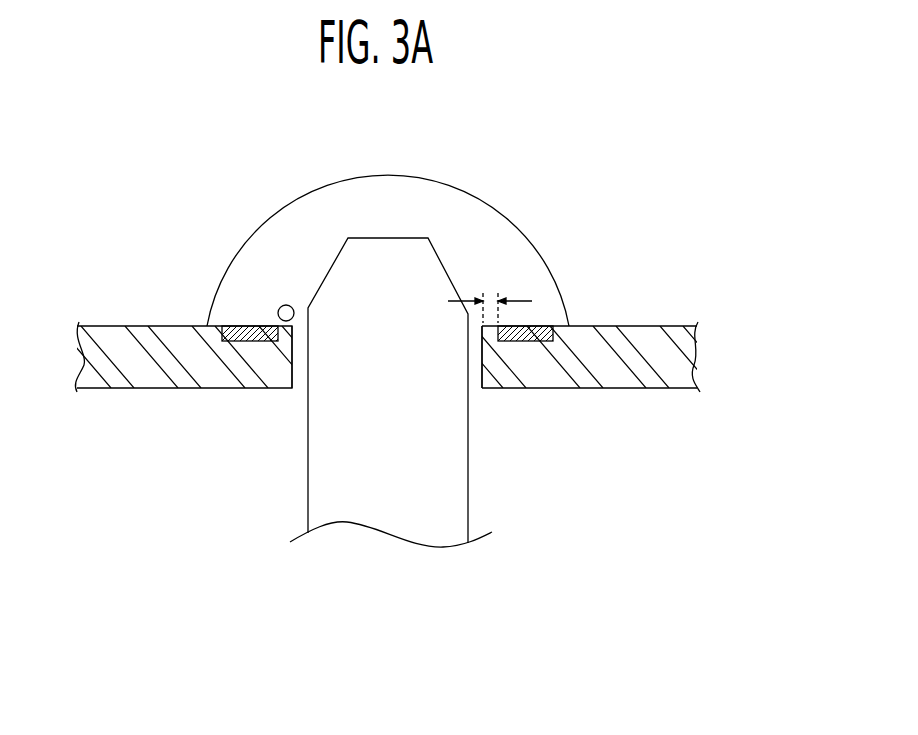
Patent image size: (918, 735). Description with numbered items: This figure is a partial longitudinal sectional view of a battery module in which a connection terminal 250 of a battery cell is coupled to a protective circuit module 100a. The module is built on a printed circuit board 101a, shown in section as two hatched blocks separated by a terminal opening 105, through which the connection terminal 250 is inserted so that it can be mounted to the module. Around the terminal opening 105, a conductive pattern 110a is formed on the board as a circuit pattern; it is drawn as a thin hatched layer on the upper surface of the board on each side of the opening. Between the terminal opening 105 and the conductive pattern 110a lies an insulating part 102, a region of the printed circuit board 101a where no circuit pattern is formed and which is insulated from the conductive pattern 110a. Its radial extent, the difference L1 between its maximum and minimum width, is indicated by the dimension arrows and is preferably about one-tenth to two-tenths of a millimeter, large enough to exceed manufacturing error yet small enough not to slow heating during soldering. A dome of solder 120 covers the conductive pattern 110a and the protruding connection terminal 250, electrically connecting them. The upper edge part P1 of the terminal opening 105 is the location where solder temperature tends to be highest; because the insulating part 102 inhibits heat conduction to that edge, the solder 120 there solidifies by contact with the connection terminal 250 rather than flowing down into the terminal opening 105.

The light emitting device package 100a is at (375, 376).
The printed circuit board 101a is at (138, 388).
The insulating part 102 is at (283, 350).
The terminal opening 105 is at (482, 360).
The conductive pattern 110a is at (240, 326).
The solder 120 is at (475, 218).
The connection terminal 250 is at (383, 513).
The upper edge part of the terminal opening P1 is at (281, 305).
The difference between maximum and minimum width of the insulating part L1 is at (488, 298).